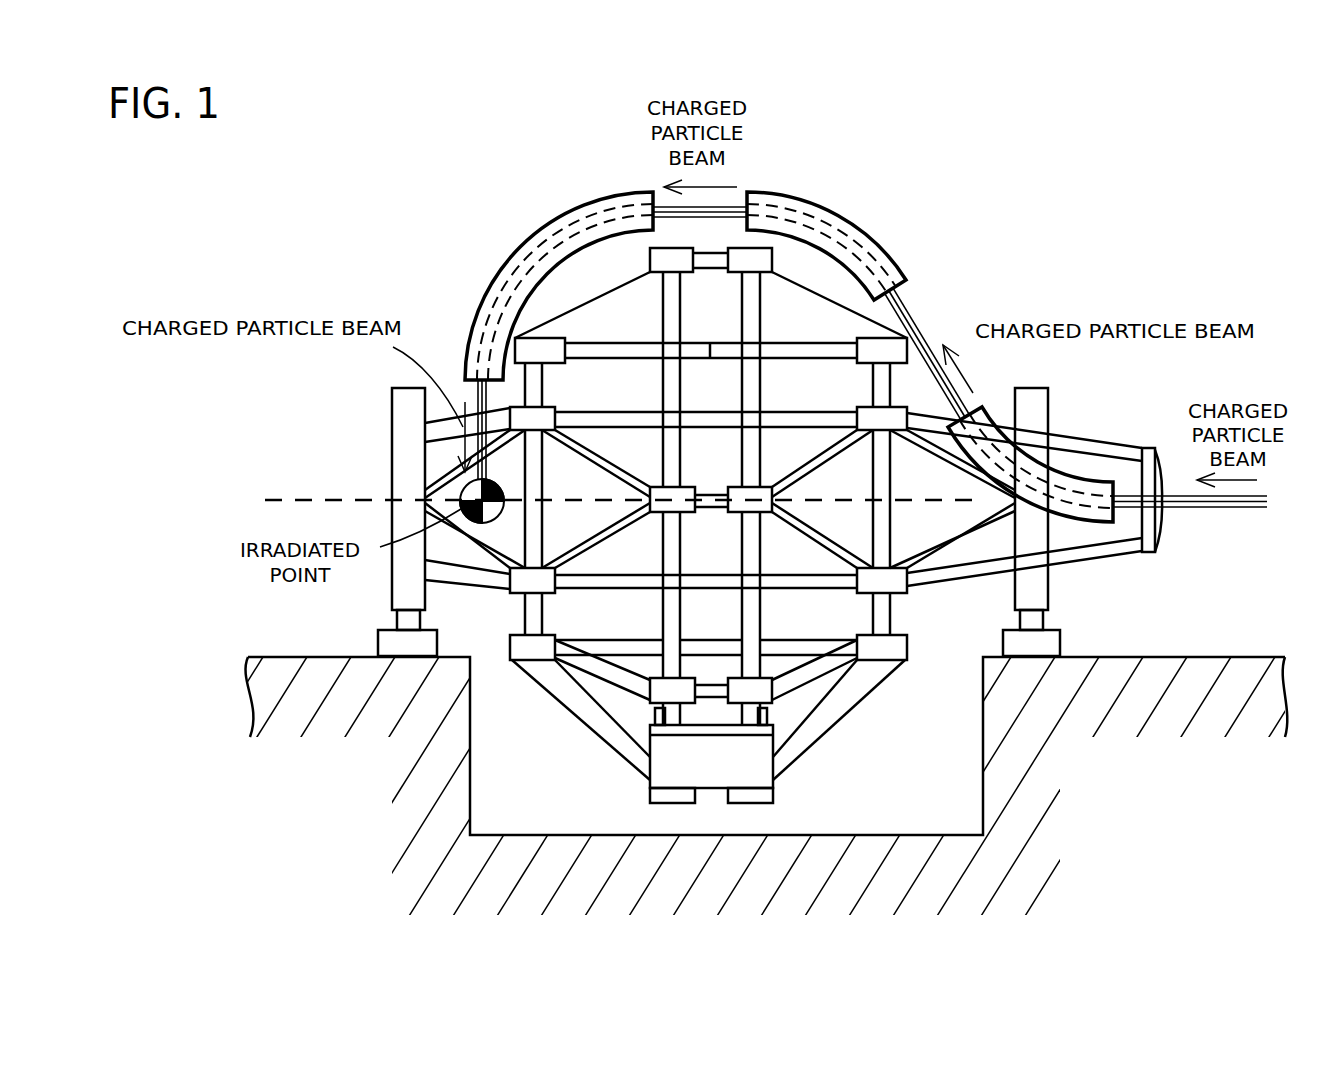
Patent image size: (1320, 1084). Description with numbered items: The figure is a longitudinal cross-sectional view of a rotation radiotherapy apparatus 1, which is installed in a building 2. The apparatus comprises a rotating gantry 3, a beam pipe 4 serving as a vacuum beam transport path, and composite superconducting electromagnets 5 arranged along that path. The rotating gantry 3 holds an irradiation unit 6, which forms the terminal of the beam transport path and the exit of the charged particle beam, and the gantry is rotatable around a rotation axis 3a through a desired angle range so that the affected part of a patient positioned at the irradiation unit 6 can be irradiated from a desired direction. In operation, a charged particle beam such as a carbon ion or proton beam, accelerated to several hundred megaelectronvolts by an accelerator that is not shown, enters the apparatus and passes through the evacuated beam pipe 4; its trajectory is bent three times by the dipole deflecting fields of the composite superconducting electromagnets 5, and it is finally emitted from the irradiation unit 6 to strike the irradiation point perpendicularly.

The rotation radiotherapy apparatus 1 is at (790, 450).
The building 2 is at (1080, 656).
The rotating gantry 3 is at (398, 437).
The rotation axis 3a is at (368, 500).
The beam pipe 4 is at (914, 313).
The composite superconducting electromagnets 5 is at (570, 221).
The irradiation unit 6 is at (470, 385).